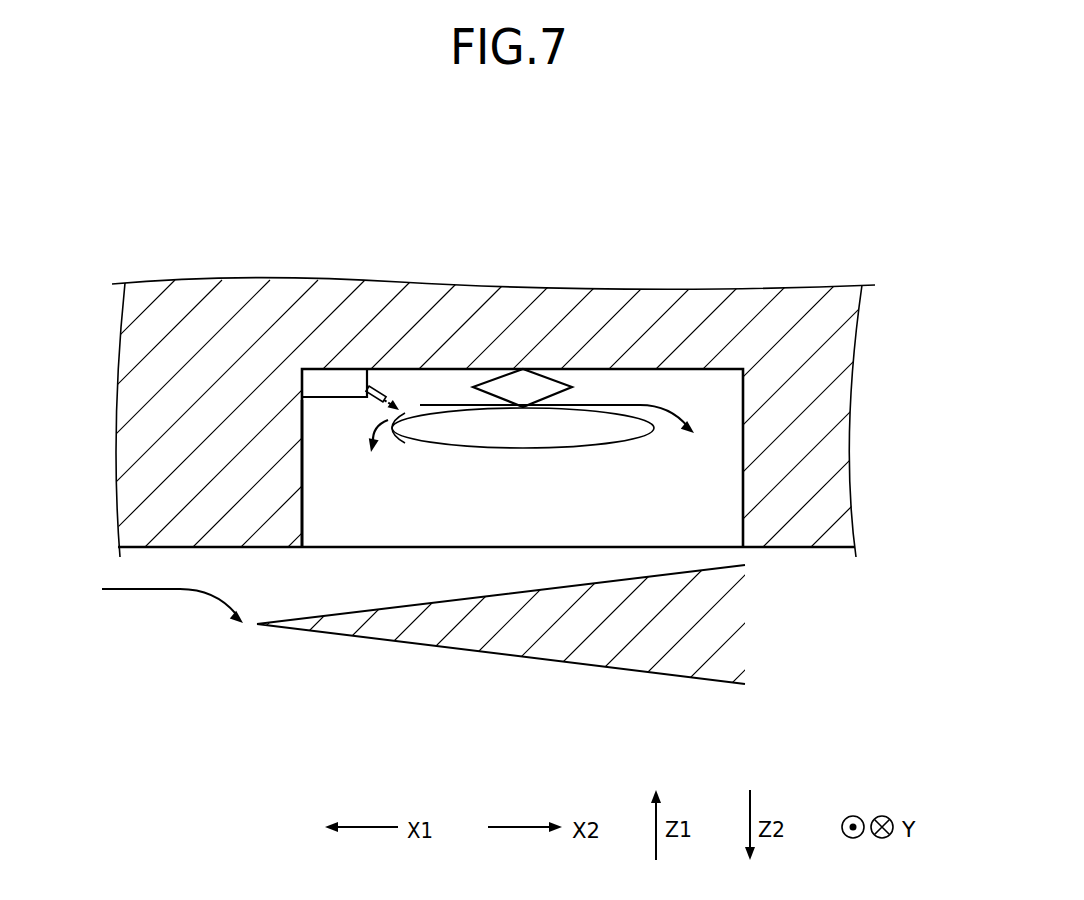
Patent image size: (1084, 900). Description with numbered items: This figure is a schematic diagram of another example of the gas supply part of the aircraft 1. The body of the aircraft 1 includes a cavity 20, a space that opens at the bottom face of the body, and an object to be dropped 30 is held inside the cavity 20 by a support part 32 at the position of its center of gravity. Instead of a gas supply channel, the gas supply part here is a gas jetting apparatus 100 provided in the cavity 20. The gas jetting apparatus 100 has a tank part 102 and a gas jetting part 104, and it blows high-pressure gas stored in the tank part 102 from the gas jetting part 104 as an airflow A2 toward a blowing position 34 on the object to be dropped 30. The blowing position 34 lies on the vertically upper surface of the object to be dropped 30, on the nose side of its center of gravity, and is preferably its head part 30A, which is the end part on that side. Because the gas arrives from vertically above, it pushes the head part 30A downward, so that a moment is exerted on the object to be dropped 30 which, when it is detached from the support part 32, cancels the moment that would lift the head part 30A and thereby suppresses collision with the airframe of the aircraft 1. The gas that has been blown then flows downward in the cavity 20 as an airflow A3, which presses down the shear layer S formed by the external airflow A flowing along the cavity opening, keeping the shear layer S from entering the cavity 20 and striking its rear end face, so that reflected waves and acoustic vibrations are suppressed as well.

The aircraft 1 is at (832, 200).
The cavity 20 is at (589, 505).
The object to be dropped 30 is at (578, 423).
The head part 30A is at (391, 426).
The support part 32 is at (523, 387).
The blowing position 34 is at (410, 406).
The gas jetting apparatus 100 is at (330, 430).
The tank part 102 is at (330, 380).
The gas jetting part 104 is at (377, 387).
The shear layer S is at (686, 657).
The airflow A is at (162, 601).
The airflow A2 is at (395, 390).
The airflow A3 is at (535, 445).